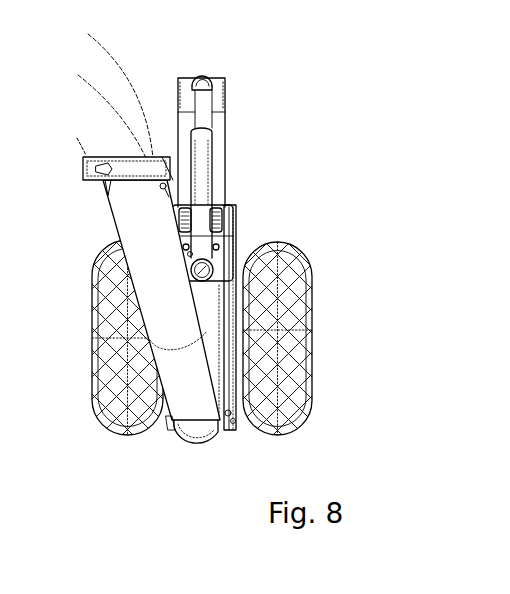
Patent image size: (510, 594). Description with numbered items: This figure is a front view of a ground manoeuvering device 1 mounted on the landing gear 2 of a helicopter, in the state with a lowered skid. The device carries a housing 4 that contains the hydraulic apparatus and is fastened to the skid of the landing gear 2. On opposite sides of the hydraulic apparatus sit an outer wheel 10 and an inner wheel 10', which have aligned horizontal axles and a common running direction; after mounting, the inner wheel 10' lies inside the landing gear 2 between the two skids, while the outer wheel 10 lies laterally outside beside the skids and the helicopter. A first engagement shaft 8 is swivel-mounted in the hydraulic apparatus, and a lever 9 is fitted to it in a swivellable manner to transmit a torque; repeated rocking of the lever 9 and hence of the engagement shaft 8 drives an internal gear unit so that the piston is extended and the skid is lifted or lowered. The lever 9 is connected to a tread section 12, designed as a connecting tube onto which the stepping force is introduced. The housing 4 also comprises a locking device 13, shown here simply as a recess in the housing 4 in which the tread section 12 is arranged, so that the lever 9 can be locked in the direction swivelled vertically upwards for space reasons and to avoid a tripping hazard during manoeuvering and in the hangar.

The ground manoeuvering device 1 is at (70, 400).
The landing gear 2 is at (143, 221).
The housing 4 is at (218, 162).
The first engagement shaft 8 is at (205, 268).
The lever 9 is at (203, 145).
The outer wheel 10 is at (302, 331).
The inner wheel 10' is at (100, 330).
The tread section 12 is at (201, 73).
The locking device 13 is at (222, 92).